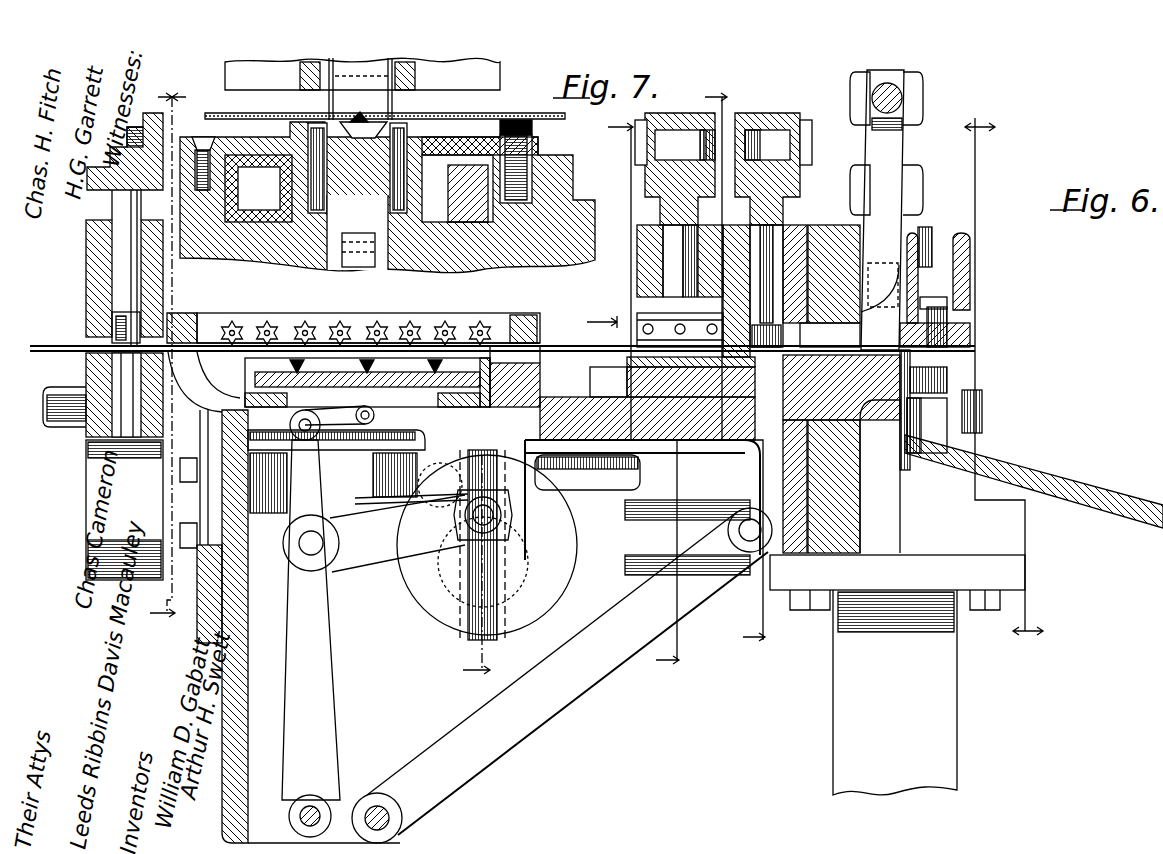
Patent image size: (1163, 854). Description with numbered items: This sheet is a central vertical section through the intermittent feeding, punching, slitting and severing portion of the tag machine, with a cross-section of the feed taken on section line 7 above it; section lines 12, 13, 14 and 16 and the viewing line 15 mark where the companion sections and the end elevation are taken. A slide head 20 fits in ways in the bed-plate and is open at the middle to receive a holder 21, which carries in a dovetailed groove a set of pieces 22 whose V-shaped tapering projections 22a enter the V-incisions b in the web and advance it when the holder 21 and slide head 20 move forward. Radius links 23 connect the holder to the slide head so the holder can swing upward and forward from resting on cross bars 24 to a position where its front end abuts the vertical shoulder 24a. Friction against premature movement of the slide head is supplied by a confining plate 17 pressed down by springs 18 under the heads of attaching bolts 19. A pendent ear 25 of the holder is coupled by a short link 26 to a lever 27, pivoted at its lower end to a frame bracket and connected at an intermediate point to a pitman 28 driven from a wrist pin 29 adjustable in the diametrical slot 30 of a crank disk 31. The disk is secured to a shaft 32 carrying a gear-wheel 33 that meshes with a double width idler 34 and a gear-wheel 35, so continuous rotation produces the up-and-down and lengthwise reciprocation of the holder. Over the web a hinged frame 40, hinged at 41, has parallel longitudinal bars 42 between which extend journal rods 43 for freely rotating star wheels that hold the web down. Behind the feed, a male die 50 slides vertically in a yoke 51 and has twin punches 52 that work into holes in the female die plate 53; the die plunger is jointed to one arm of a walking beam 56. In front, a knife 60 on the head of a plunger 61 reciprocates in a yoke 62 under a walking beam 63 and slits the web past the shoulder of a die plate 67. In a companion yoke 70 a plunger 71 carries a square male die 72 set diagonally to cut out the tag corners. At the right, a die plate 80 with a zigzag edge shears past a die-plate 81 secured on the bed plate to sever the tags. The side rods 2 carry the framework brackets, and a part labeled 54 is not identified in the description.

In FIG. 6, the side rods 2 is at (60, 512).
In FIG. 6, the section line 7— 7 is at (419, 309).
In FIG. 6, the section line 12— 12 is at (620, 316).
In FIG. 6, the section line 13— 13 is at (640, 112).
In FIG. 6, the section line 14— 14 is at (735, 90).
In FIG. 6, the end elevation view line 15 is at (990, 105).
In FIG. 6, the section line 16— 16 is at (185, 87).
In FIG. 7, the confining plate 17 is at (475, 128).
In FIG. 7, the springs 18 is at (533, 130).
In FIG. 7, the attaching bolts 19 is at (485, 150).
In FIG. 7, the slide head 20 is at (480, 178).
In FIG. 6, the slide head 20 is at (586, 392).
In FIG. 7, the holder 21 is at (380, 135).
In FIG. 6, the holder 21 is at (285, 340).
In FIG. 7, the pieces 22 is at (320, 114).
In FIG. 6, the pieces 22 is at (515, 290).
In FIG. 7, the V-shaped tapering projections 22a is at (362, 112).
In FIG. 6, the V-shaped tapering projections 22a is at (345, 340).
In FIG. 7, the radius links 23 is at (300, 145).
In FIG. 6, the radius links 23 is at (240, 340).
In FIG. 6, the cross bars 24 is at (232, 340).
In FIG. 6, the vertical shoulder 24a is at (525, 330).
In FIG. 6, the pendent ear 25 is at (282, 360).
In FIG. 6, the short link 26 is at (350, 345).
In FIG. 6, the lever 27 is at (348, 677).
In FIG. 6, the pitman 28 is at (397, 531).
In FIG. 6, the wrist pin 29 is at (525, 530).
In FIG. 6, the diametrical slot 30 is at (500, 636).
In FIG. 6, the crank disk 31 is at (555, 604).
In FIG. 6, the shaft 32 is at (470, 590).
In FIG. 6, the gear-wheel 33 is at (570, 540).
In FIG. 6, the double width idler 34 is at (395, 490).
In FIG. 6, the gear-wheel 35 is at (587, 477).
In FIG. 7, the hinged frame 40 is at (500, 85).
In FIG. 6, the hinged frame 40 is at (530, 315).
In FIG. 7, the hinge 41 is at (330, 58).
In FIG. 6, the hinge 41 is at (262, 282).
In FIG. 7, the parallel longitudinal bars 42 is at (418, 64).
In FIG. 6, the parallel longitudinal bars 42 is at (480, 340).
In FIG. 7, the journal rods 43 is at (420, 86).
In FIG. 6, the male die 50 is at (122, 238).
In FIG. 6, the yoke 51 is at (100, 190).
In FIG. 6, the twin punches 52 is at (112, 310).
In FIG. 6, the female die 53 is at (104, 395).
In FIG. 6, the threaded sleeve 54 is at (86, 447).
In FIG. 6, the lever or walking beam 56 is at (138, 150).
In FIG. 6, the knife 60 is at (637, 336).
In FIG. 6, the plunger 61 is at (660, 240).
In FIG. 6, the yoke 62 is at (640, 276).
In FIG. 6, the lever or walking beam 63 is at (668, 112).
In FIG. 6, the die plate 67 is at (640, 375).
In FIG. 6, the companion yoke 70 is at (830, 245).
In FIG. 6, the plunger 71 is at (790, 240).
In FIG. 6, the male die 72 is at (775, 336).
In FIG. 6, the die plate 80 is at (970, 336).
In FIG. 6, the die-plate 81 is at (915, 398).
In FIG. 6, the incisions b is at (464, 301).